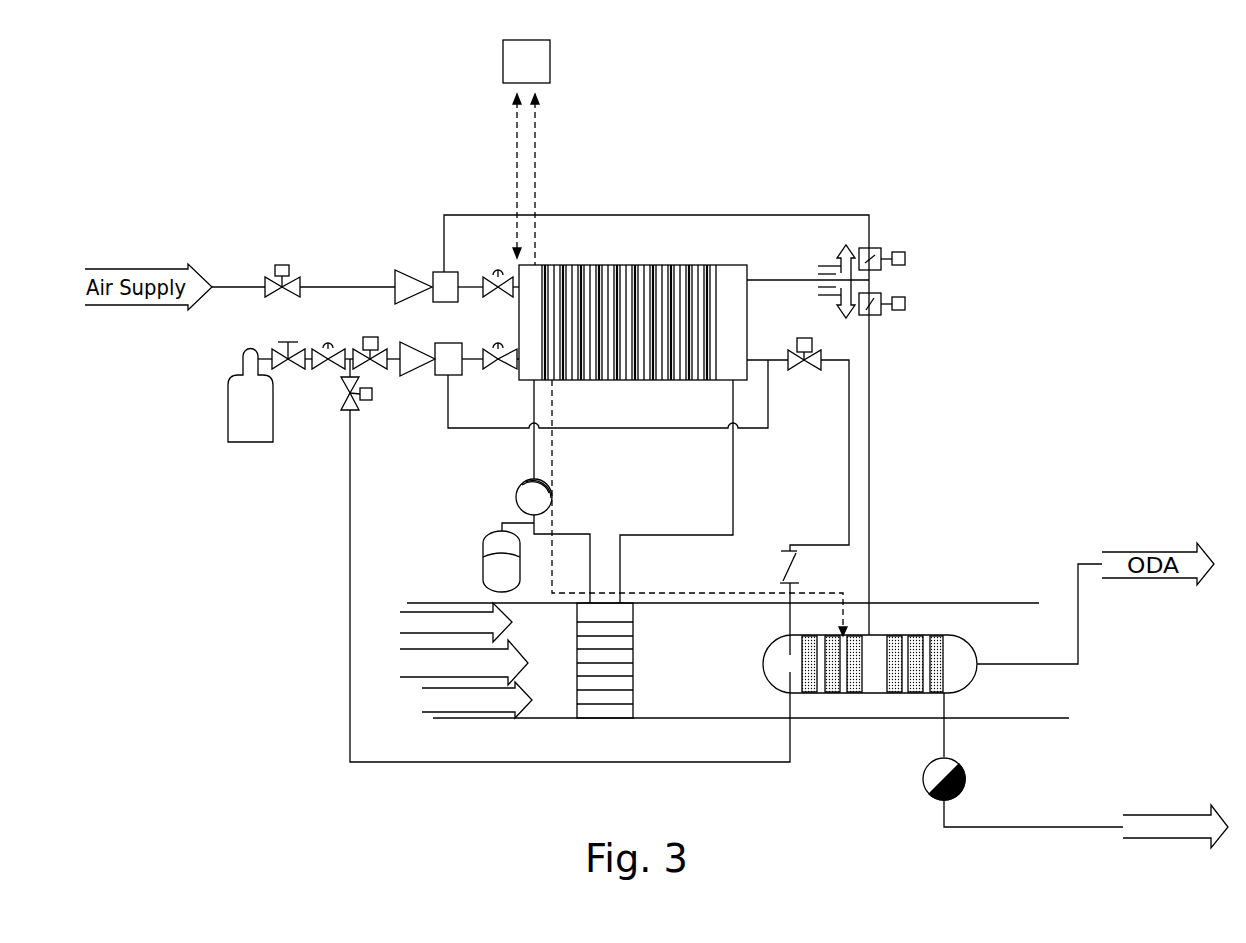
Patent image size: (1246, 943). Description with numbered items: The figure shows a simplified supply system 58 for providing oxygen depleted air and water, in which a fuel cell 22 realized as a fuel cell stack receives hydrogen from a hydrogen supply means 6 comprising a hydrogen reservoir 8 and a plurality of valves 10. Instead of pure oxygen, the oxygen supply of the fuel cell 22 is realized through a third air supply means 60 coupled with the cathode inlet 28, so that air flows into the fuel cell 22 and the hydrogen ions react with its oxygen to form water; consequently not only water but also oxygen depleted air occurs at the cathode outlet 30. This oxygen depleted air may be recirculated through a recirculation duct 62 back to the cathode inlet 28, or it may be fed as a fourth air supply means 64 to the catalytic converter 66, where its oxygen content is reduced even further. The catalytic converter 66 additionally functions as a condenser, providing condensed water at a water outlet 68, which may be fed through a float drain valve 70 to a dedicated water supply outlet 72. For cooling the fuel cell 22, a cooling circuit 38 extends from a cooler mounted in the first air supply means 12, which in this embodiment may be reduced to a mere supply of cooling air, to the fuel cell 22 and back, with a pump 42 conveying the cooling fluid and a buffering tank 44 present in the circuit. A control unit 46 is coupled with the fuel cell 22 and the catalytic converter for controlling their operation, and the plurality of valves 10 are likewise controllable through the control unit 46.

The hydrogen supply means 6 is at (305, 503).
The hydrogen reservoir 8 is at (238, 405).
The plurality of valves 10 is at (320, 393).
The first air supply means 12 is at (487, 735).
The fuel cell 22 is at (690, 270).
The cathode inlet 28 is at (401, 240).
The cathode outlet 30 is at (759, 276).
The cooling circuit 38 is at (742, 489).
The pump 42 is at (517, 497).
The buffering tank 44 is at (483, 546).
The control unit 46 is at (540, 68).
The system 58 is at (816, 149).
The third air supply means 60 is at (275, 245).
The recirculation duct 62 is at (855, 215).
The fourth air supply means 64 is at (871, 438).
The catalytic converter 66 is at (926, 632).
The water outlet 68 is at (957, 703).
The float drain valve 70 is at (927, 783).
The water supply outlet 72 is at (1084, 818).